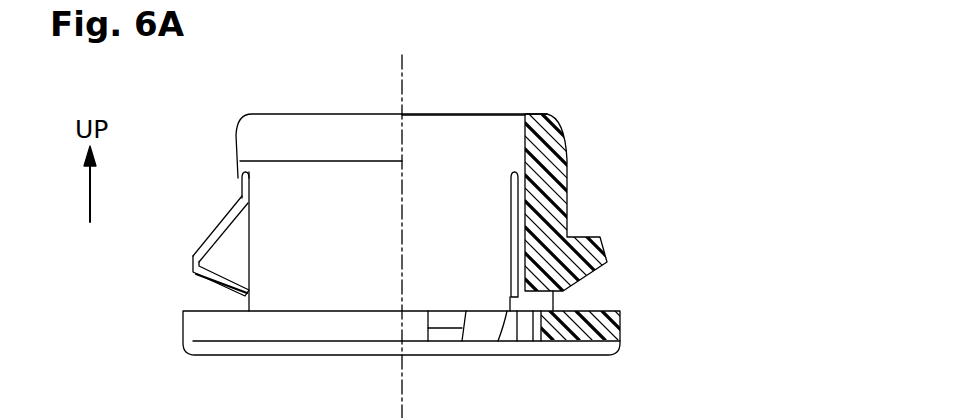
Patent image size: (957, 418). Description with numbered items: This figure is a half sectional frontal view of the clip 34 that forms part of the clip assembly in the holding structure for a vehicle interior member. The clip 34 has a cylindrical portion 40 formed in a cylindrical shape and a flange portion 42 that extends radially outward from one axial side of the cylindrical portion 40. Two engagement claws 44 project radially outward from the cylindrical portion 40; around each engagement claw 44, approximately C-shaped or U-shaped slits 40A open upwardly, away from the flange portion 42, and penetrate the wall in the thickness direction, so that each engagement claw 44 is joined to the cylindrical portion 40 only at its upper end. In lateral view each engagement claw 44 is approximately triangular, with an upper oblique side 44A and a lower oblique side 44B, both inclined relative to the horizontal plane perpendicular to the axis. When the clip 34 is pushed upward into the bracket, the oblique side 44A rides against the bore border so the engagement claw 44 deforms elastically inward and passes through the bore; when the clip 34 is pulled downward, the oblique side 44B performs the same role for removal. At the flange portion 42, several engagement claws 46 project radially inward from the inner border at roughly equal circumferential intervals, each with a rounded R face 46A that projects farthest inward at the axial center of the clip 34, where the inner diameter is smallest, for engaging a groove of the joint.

The clip 34 is at (686, 147).
The cylindrical portion 40 is at (534, 114).
The slits 40A is at (244, 253).
The flange portion 42 is at (620, 320).
The engagement claw 44 is at (198, 243).
The oblique side 44A is at (217, 220).
The oblique side 44B is at (208, 278).
The engagement claw 46 is at (460, 327).
The R face 46A is at (487, 330).